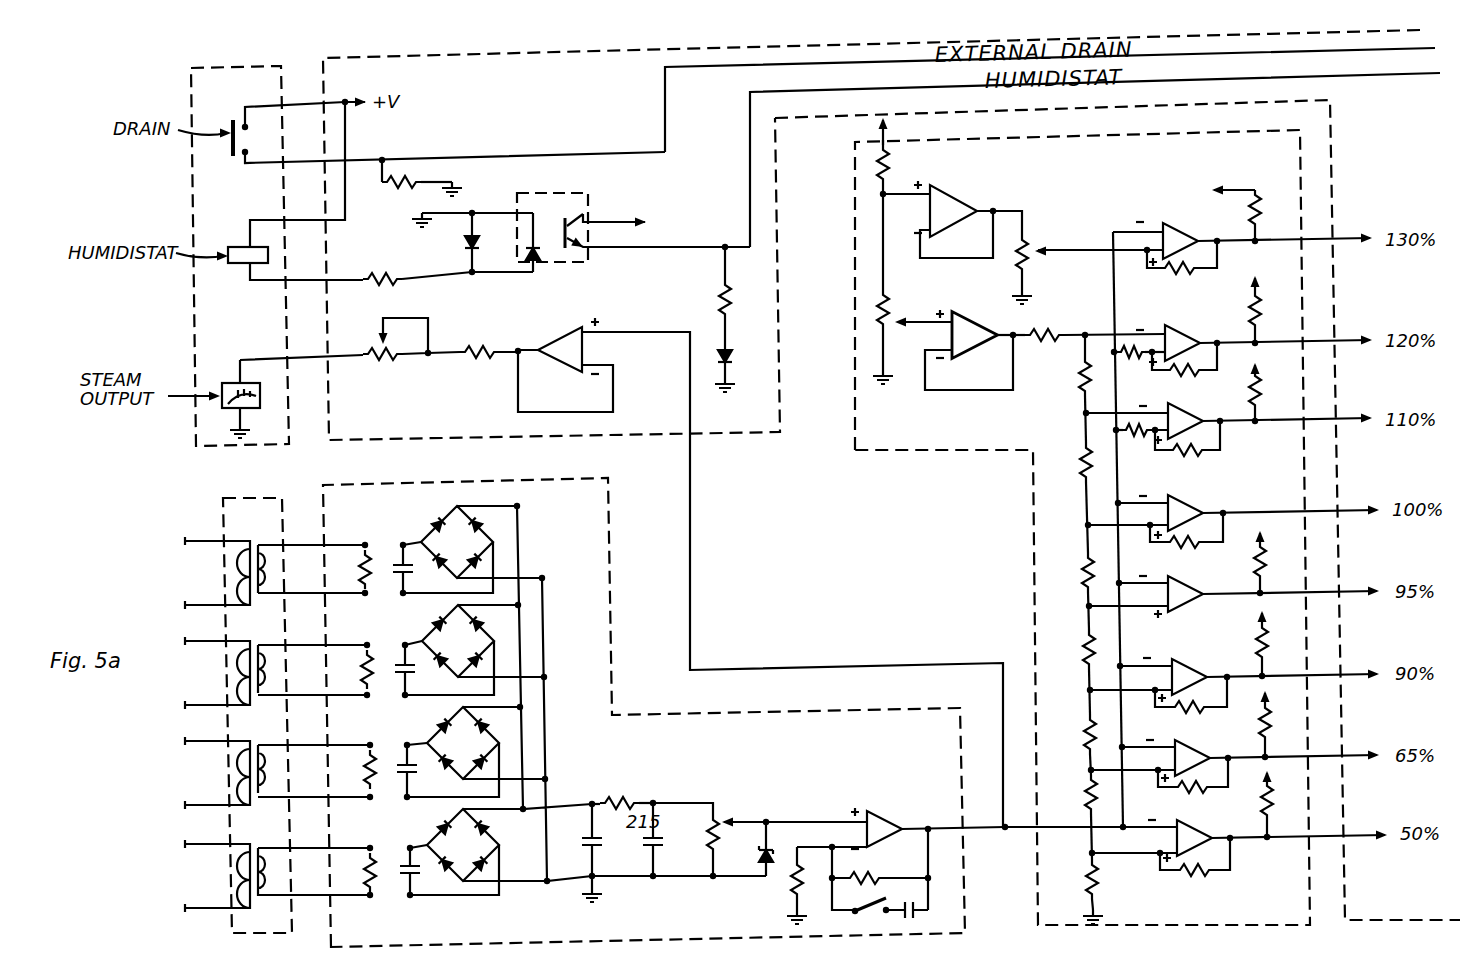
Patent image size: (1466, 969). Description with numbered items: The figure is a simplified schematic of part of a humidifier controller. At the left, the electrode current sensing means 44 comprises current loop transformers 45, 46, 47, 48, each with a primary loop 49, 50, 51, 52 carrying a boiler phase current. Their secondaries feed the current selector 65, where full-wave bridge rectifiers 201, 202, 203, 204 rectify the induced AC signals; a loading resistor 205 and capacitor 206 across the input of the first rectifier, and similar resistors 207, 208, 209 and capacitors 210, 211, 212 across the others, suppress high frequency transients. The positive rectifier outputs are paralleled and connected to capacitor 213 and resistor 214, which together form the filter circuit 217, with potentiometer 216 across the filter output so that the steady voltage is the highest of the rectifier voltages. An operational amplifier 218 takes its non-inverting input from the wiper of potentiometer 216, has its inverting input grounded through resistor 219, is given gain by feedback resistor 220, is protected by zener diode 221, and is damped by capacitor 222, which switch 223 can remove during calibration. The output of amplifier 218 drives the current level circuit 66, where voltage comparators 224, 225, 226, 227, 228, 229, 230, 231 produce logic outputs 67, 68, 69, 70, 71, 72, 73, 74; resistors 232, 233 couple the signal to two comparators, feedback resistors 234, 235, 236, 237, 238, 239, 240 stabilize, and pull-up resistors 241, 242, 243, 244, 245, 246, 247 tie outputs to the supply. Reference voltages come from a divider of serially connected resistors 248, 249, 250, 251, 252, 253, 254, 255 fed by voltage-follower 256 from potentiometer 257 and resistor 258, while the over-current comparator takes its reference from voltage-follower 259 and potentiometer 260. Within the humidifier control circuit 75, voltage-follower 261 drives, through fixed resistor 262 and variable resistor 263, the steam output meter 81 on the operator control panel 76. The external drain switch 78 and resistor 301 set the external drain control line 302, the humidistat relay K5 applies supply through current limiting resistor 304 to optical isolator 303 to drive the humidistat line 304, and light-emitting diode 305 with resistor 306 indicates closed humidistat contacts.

The electrode current sensing means 44 is at (220, 496).
The current loop transformer 45 is at (203, 584).
The current loop transformer 46 is at (203, 694).
The current loop transformer 47 is at (203, 786).
The current loop transformer 48 is at (203, 888).
The primary loop 49 is at (262, 540).
The primary loop 50 is at (270, 644).
The primary loop 51 is at (270, 744).
The primary loop 52 is at (270, 846).
The current selector 65 is at (612, 522).
The current level circuit 66 is at (958, 455).
The logic output line 67 is at (1356, 836).
The logic output line 68 is at (1356, 756).
The logic output line 69 is at (1352, 674).
The logic output line 70 is at (1352, 592).
The logic output line 71 is at (1352, 512).
The logic output line 72 is at (1346, 422).
The logic output line 73 is at (1346, 342).
The logic output line 74 is at (1346, 240).
The humidifier control circuit 75 is at (746, 440).
The operator control panel 76 is at (186, 82).
The external drain switch 78 is at (234, 150).
The steam output meter 81 is at (254, 400).
The humidistat relay K5 is at (246, 265).
The full-wave bridge rectifier 201 is at (470, 553).
The full-wave bridge rectifier 202 is at (470, 652).
The full-wave bridge rectifier 203 is at (475, 754).
The full-wave bridge rectifier 204 is at (475, 856).
The loading resistor 205 is at (358, 556).
The capacitor 206 is at (398, 580).
The loading resistor 207 is at (360, 656).
The loading resistor 208 is at (362, 758).
The loading resistor 209 is at (362, 860).
The capacitor 210 is at (400, 680).
The capacitor 211 is at (402, 780).
The capacitor 212 is at (404, 882).
The capacitor 213 is at (588, 845).
The resistor 214 is at (628, 770).
The potentiometer 216 is at (726, 816).
The filter circuit 217 is at (640, 870).
The operational amplifier 218 is at (884, 824).
The resistor 219 is at (790, 890).
The feedback resistor 220 is at (860, 876).
The zener diode 221 is at (772, 858).
The damping capacitor 222 is at (918, 912).
The switch 223 is at (888, 892).
The voltage comparator 224 is at (1212, 850).
The voltage comparator 225 is at (1166, 780).
The voltage comparator 226 is at (1164, 700).
The voltage comparator 227 is at (1180, 604).
The voltage comparator 228 is at (1208, 512).
The voltage comparator 229 is at (1212, 432).
The voltage comparator 230 is at (1170, 326).
The voltage comparator 231 is at (1171, 222).
The resistor 232 is at (1144, 440).
The resistor 233 is at (1144, 362).
The feedback resistor 234 is at (1196, 878).
The feedback resistor 235 is at (1204, 792).
The feedback resistor 236 is at (1198, 714).
The feedback resistor 237 is at (1178, 550).
The feedback resistor 238 is at (1200, 458).
The feedback resistor 239 is at (1196, 372).
The feedback resistor 240 is at (1182, 274).
The pull-up resistor 241 is at (1272, 826).
The pull-up resistor 242 is at (1270, 744).
The pull-up resistor 243 is at (1266, 660).
The pull-up resistor 244 is at (1264, 578).
The pull-up resistor 245 is at (1262, 400).
The pull-up resistor 246 is at (1250, 304).
The pull-up resistor 247 is at (1276, 186).
The divider resistor 248 is at (1096, 886).
The divider resistor 249 is at (1086, 798).
The divider resistor 250 is at (1084, 724).
The divider resistor 251 is at (1082, 638).
The divider resistor 252 is at (1080, 556).
The divider resistor 253 is at (1080, 452).
The divider resistor 254 is at (1082, 368).
The divider resistor 255 is at (1060, 320).
The operational amplifier voltage-follower 256 is at (950, 340).
The potentiometer 257 is at (890, 312).
The resistor 258 is at (887, 178).
The voltage-follower 259 is at (958, 204).
The potentiometer 260 is at (1028, 242).
The operational amplifier voltage-follower 261 is at (565, 336).
The fixed resistor 262 is at (482, 358).
The variable resistor 263 is at (390, 358).
The resistor 301 is at (432, 184).
The external drain control line 302 is at (1385, 48).
The optical isolator 303 is at (585, 193).
The current limiting resistor 304 is at (396, 274).
The light-emitting diode 305 is at (735, 356).
The current-limiting resistor 306 is at (716, 299).